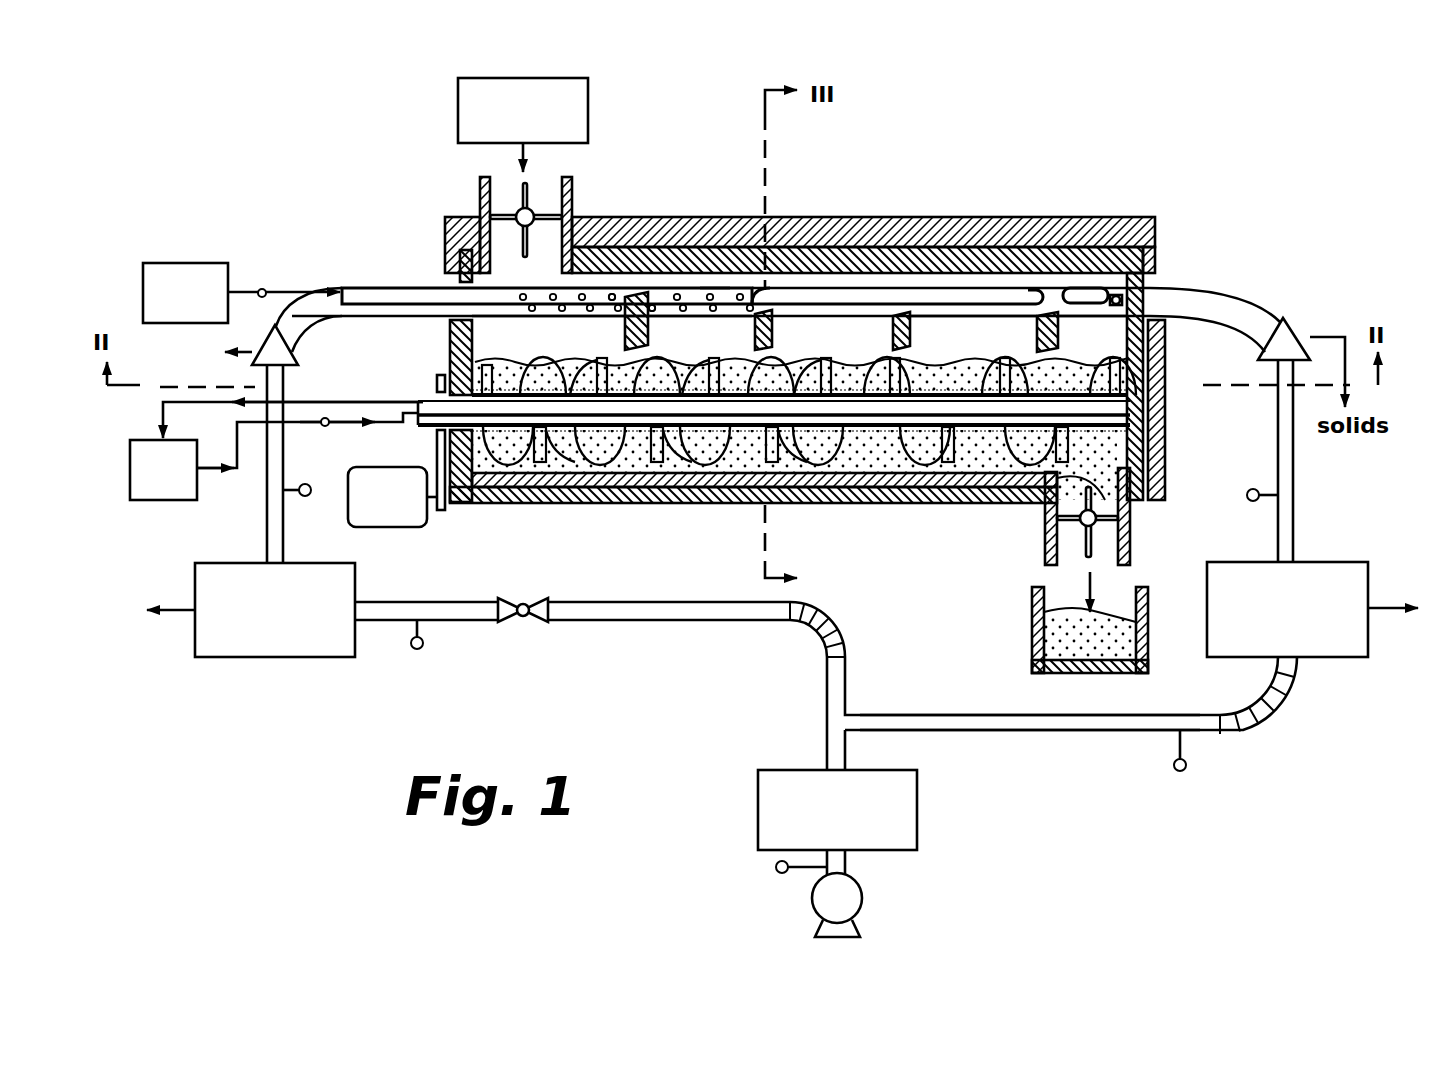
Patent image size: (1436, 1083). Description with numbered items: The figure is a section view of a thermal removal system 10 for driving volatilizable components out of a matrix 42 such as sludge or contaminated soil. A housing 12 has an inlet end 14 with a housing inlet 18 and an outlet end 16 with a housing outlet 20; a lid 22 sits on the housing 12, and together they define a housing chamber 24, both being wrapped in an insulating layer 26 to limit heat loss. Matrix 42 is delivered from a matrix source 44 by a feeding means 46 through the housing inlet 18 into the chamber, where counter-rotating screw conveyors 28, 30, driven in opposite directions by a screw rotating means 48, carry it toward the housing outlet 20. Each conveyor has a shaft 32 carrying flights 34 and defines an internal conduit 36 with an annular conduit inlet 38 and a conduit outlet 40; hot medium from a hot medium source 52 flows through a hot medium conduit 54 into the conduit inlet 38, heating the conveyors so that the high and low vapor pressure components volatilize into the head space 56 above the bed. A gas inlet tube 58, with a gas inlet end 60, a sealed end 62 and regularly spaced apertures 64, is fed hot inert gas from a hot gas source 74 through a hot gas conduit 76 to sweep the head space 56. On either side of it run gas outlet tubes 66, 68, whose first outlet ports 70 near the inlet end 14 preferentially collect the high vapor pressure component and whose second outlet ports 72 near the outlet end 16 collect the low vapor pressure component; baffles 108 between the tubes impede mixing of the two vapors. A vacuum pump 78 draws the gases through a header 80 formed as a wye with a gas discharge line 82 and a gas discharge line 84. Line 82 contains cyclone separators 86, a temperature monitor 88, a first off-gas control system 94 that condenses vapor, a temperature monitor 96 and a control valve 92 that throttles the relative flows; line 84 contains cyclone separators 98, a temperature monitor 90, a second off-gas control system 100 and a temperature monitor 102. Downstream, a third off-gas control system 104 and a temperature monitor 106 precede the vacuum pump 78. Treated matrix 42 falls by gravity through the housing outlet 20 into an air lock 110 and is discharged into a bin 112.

The thermal removal system 10 is at (283, 150).
The housing 12 is at (556, 501).
The inlet end 14 is at (615, 345).
The outlet end 16 is at (1103, 345).
The housing inlet 18 is at (470, 232).
The housing outlet 20 is at (1130, 505).
The lid 22 is at (818, 240).
The housing chamber 24 is at (1107, 450).
The layer 26 is at (940, 226).
The screw conveyor 28 is at (703, 435).
The screw conveyor 30 is at (910, 442).
The shaft 32 is at (993, 465).
The flights 34 is at (835, 463).
The conduit 36 is at (778, 402).
The conduit inlet 38 is at (417, 398).
The conduit outlet 40 is at (424, 400).
The matrix 42 is at (513, 348).
The matrix source 44 is at (542, 122).
The feeding means 46 is at (540, 208).
The screw rotating means 48 is at (406, 507).
The hot medium source 52 is at (182, 485).
The hot medium conduit 54 is at (325, 426).
The head space 56 is at (1022, 345).
The gas inlet tube 58 is at (713, 284).
The gas inlet end 60 is at (383, 290).
The sealed end 62 is at (1092, 288).
The apertures 64 is at (613, 294).
The gas outlet tube 66 is at (1010, 300).
The gas outlet tube 68 is at (659, 308).
The first outlet ports 70 is at (559, 314).
The second outlet ports 72 is at (1064, 292).
The hot gas source 74 is at (204, 309).
The hot gas conduit 76 is at (262, 289).
The vacuum pump 78 is at (862, 898).
The header 80 is at (852, 680).
The gas discharge line 82 is at (264, 498).
The gas discharge line 84 is at (1298, 448).
The cyclone separators 86 is at (296, 347).
The temperature monitor 88 is at (308, 497).
The temperature monitor 90 is at (423, 648).
The control valve 92 is at (523, 624).
The first off-gas control system 94 is at (275, 658).
The temperature monitor 96 is at (1250, 502).
The cyclone separators 98 is at (1265, 355).
The second off-gas control system 100 is at (1330, 658).
The temperature monitor 102 is at (1186, 770).
The third off-gas control system 104 is at (917, 818).
The temperature monitor 106 is at (776, 872).
The baffles 108 is at (652, 330).
The air lock 110 is at (1112, 530).
The bin 112 is at (1032, 602).